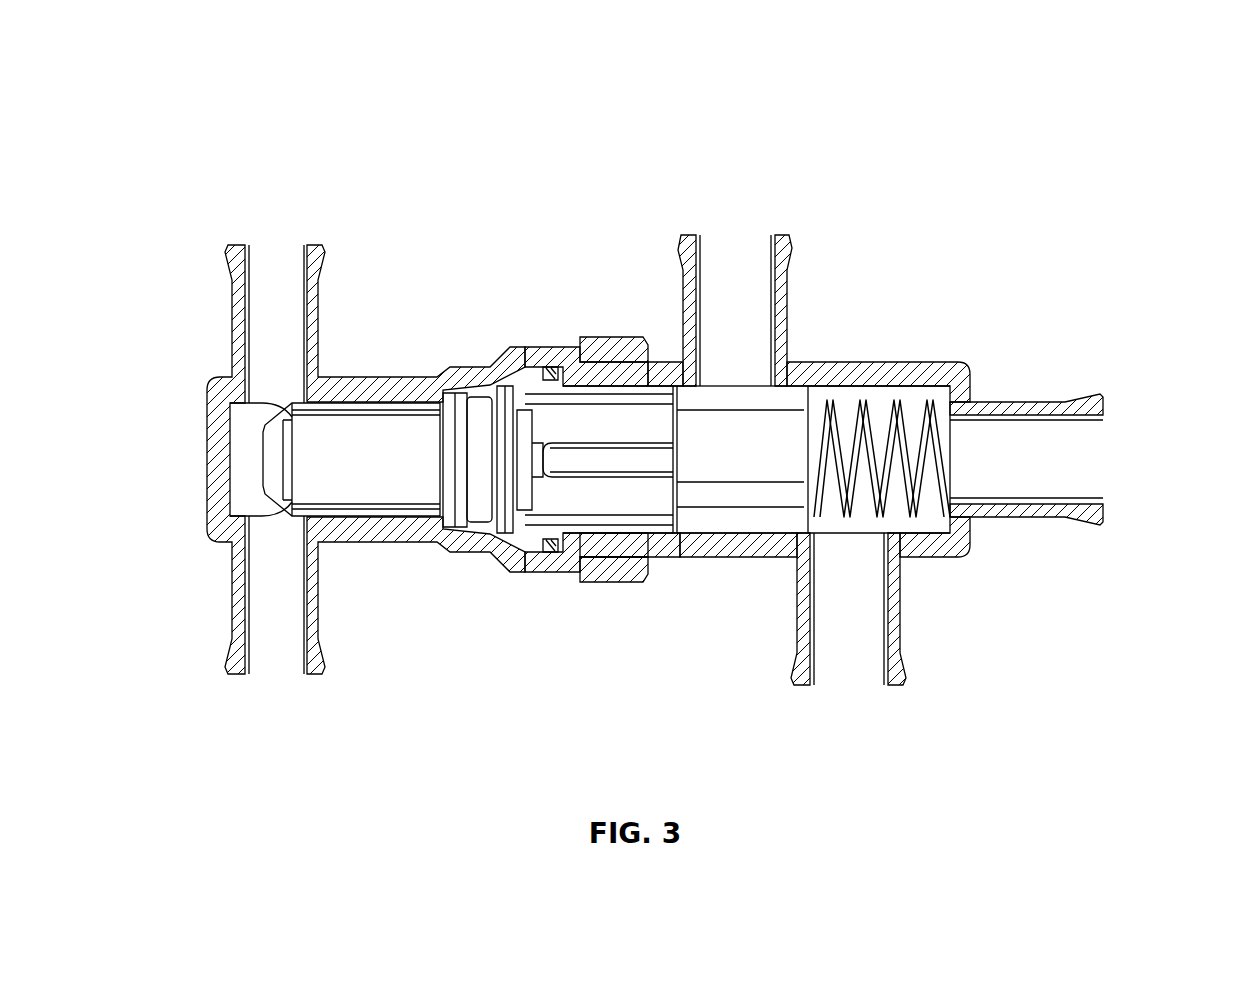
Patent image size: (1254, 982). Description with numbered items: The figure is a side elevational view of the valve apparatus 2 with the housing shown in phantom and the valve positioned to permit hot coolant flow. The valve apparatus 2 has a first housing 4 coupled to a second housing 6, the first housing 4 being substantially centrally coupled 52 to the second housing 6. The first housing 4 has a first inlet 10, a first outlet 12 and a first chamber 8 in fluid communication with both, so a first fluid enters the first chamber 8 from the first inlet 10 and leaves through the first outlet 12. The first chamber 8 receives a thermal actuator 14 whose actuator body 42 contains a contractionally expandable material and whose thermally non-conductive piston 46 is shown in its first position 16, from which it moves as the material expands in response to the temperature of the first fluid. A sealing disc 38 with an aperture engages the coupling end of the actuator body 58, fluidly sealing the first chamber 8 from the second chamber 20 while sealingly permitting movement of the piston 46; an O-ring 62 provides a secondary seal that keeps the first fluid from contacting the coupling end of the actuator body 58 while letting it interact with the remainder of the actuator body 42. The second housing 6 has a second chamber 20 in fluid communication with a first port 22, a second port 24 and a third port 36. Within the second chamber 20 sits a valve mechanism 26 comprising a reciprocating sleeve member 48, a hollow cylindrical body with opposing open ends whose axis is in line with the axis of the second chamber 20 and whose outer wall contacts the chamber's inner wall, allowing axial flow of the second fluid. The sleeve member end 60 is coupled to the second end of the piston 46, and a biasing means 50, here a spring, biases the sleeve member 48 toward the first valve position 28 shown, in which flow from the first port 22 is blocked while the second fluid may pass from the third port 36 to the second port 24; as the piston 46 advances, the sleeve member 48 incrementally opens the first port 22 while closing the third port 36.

The valve apparatus 2 is at (486, 120).
The first housing 4 is at (378, 371).
The second housing 6 is at (775, 516).
The first chamber 8 is at (250, 460).
The first inlet 10 is at (262, 676).
The first outlet 12 is at (270, 246).
The thermal actuator 14 is at (352, 451).
The first position 16 is at (547, 438).
The second chamber 20 is at (913, 408).
The first port 22 is at (728, 270).
The second port 24 is at (1117, 462).
The valve mechanism 26 is at (676, 367).
The first valve position 28 is at (692, 536).
The third port 36 is at (855, 690).
The sealing disc 38 is at (500, 534).
The actuator body 42 is at (355, 510).
The piston 46 is at (545, 480).
The sleeve member 48 is at (777, 421).
The biasing means 50 is at (922, 510).
The central coupling 52 is at (615, 584).
The coupling end of the actuator body 58 is at (487, 392).
The sleeve member end 60 is at (575, 440).
The O-ring 62 is at (455, 530).